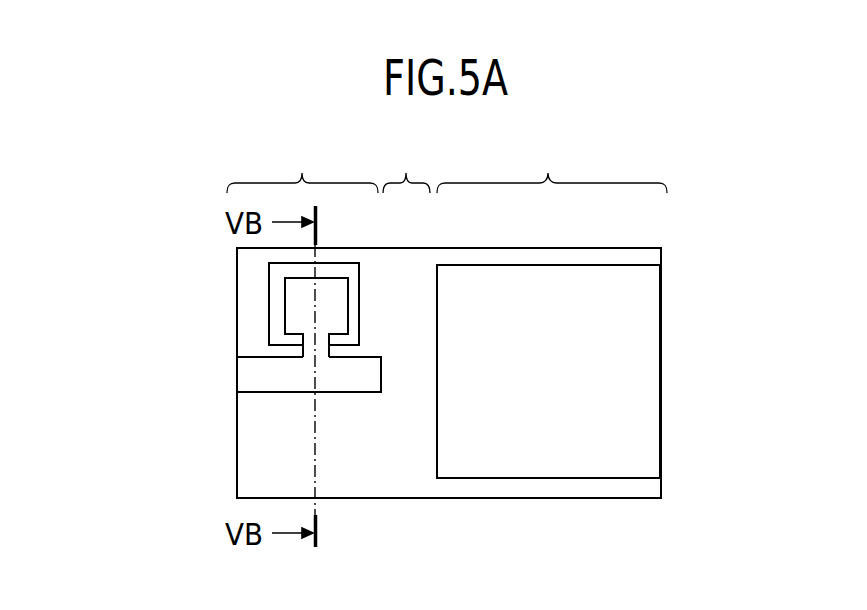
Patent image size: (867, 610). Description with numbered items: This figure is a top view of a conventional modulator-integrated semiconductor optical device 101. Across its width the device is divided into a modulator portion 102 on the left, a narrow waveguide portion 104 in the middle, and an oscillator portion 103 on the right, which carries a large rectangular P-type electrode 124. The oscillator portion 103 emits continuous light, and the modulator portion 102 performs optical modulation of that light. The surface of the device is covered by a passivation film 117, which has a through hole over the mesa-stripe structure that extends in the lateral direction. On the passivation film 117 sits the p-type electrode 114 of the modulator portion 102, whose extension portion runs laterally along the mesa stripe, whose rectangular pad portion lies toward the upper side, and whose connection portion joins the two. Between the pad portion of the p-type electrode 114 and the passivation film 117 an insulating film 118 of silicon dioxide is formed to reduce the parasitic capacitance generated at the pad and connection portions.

The modulator-integrated semiconductor optical device 101 is at (479, 373).
The modulator portion 102 is at (302, 166).
The oscillator portion 103 is at (552, 166).
The waveguide portion 104 is at (406, 166).
The p-type electrode 114 is at (255, 380).
The passivation film 117 is at (277, 453).
The insulating film 118 is at (277, 308).
The P-type electrode 124 is at (637, 435).